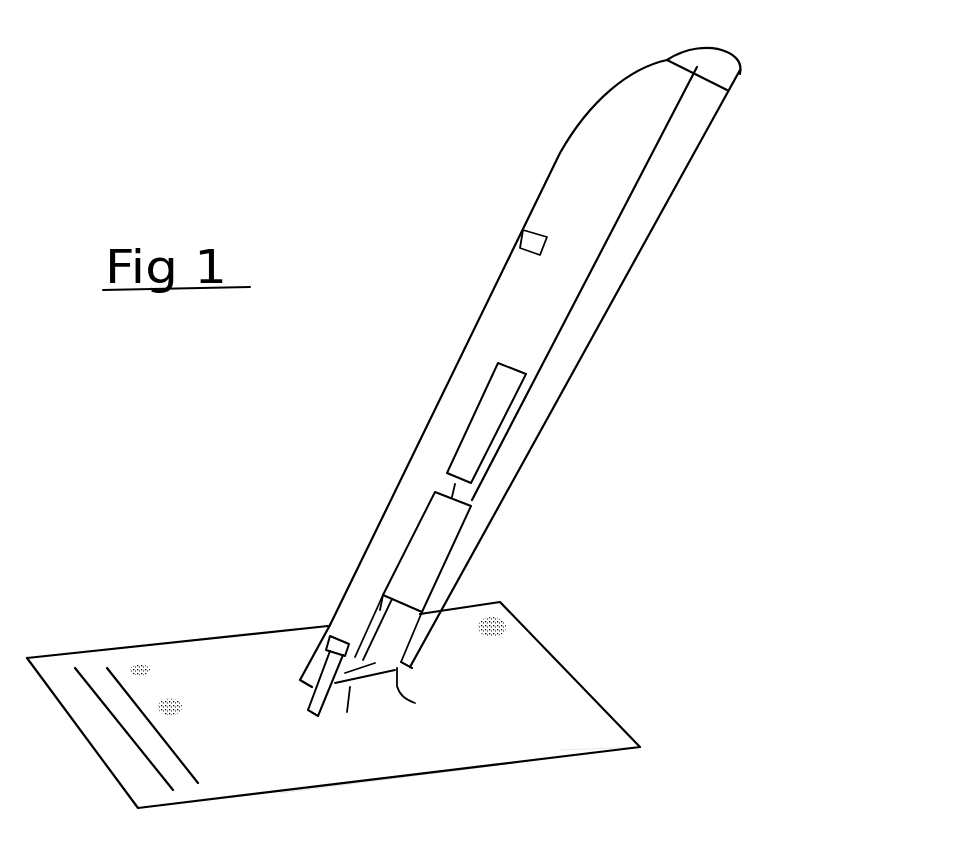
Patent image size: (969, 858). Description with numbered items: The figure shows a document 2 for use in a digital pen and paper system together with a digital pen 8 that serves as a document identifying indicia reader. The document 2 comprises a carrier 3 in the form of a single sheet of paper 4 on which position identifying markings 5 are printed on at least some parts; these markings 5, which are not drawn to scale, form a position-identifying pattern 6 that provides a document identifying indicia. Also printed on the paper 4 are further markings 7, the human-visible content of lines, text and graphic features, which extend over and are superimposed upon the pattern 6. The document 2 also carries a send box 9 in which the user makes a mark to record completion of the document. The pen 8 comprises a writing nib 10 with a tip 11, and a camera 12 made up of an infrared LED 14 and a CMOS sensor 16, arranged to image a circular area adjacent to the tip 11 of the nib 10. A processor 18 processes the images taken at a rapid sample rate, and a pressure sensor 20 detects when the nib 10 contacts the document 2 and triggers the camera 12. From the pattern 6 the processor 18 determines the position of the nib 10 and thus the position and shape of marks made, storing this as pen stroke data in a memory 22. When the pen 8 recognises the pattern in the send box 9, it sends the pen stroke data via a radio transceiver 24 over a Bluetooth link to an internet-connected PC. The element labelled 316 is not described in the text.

The document 2 is at (583, 727).
The carrier 3 is at (537, 753).
The sheet of paper 4 is at (580, 750).
The position identifying markings 5 is at (140, 663).
The position-identifying pattern 6 is at (153, 667).
The further markings 7 is at (108, 667).
The digital pen 8 is at (505, 277).
The send box 9 is at (513, 620).
The writing nib 10 is at (313, 692).
The tip 11 is at (313, 712).
The camera 12 is at (431, 674).
The infrared LED 14 is at (433, 703).
The CMOS sensor 16 is at (357, 718).
The processor 18 is at (445, 549).
The pressure sensor 20 is at (330, 625).
The memory 22 is at (477, 410).
The radio transceiver 24 is at (713, 63).
The indicator 316 is at (523, 237).